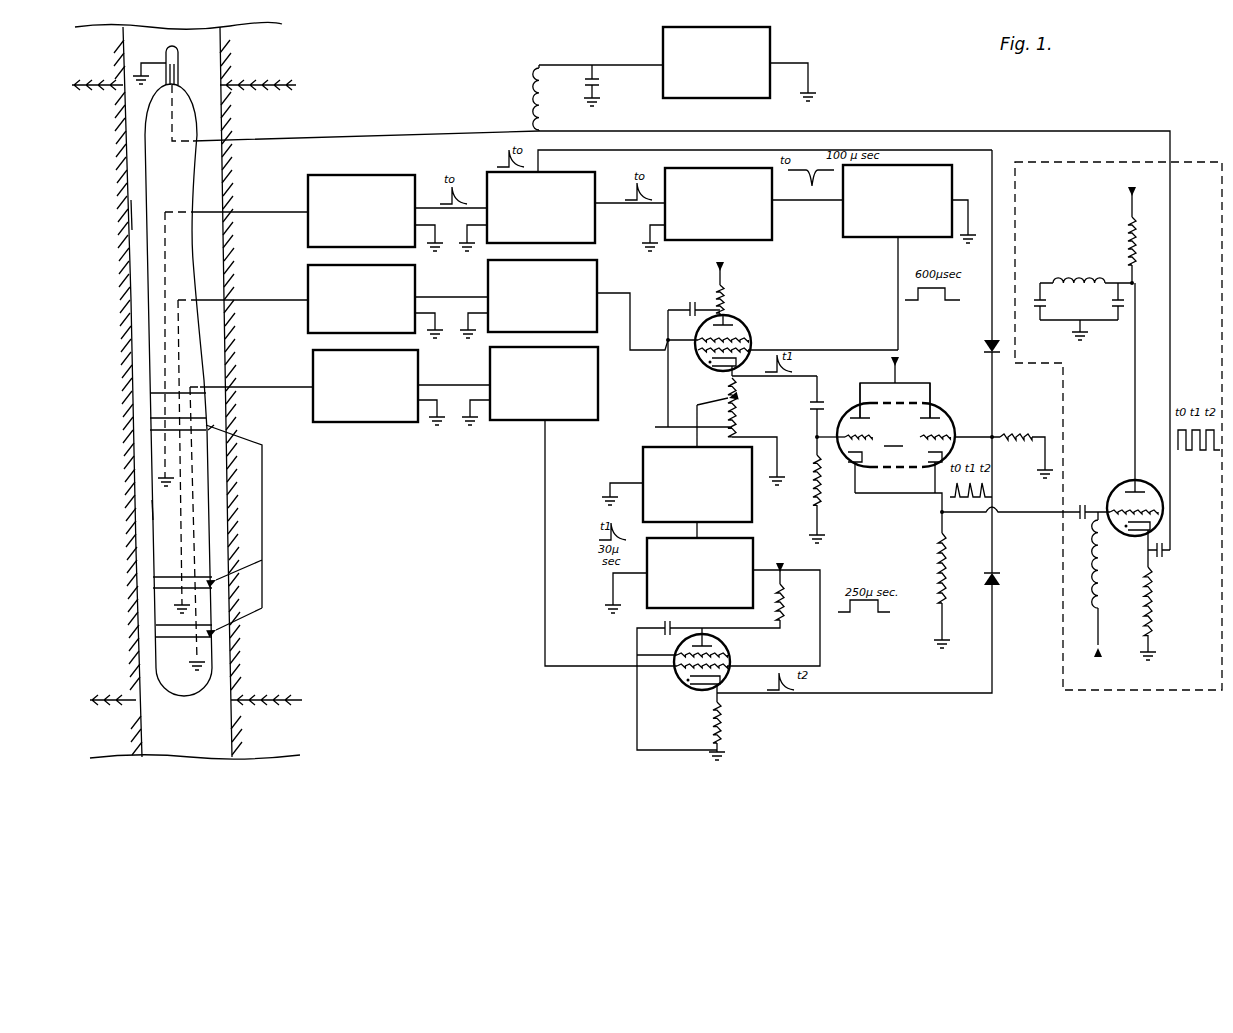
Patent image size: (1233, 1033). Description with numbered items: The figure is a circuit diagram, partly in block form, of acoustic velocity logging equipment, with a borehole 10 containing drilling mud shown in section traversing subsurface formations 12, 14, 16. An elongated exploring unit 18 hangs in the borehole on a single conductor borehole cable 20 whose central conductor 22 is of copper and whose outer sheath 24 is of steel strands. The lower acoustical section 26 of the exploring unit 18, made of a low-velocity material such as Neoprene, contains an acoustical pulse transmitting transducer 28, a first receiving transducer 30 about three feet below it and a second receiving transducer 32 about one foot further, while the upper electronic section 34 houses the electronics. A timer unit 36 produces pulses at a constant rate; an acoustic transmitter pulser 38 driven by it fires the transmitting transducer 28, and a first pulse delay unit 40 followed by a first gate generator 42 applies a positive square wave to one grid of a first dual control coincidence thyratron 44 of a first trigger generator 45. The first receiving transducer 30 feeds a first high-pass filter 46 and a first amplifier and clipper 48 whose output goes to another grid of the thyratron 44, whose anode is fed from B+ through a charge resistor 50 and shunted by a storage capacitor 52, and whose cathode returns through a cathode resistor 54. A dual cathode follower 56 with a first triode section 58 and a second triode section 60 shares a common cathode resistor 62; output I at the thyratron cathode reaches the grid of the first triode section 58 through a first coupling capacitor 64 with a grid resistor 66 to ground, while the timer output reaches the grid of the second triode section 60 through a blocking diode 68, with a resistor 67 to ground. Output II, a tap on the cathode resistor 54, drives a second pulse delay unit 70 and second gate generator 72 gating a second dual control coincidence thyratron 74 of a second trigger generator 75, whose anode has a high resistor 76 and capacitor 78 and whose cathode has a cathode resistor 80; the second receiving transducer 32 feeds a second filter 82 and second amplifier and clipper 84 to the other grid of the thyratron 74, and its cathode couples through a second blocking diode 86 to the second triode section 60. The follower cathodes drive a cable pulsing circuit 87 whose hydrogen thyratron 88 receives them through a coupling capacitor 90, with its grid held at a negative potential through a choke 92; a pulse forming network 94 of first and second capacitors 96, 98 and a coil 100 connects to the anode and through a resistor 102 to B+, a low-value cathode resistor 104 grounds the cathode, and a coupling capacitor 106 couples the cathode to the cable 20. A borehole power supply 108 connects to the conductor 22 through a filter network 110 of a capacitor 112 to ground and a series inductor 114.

The borehole 10 is at (222, 62).
The subsurface formation 12 is at (92, 61).
The subsurface formation 14 is at (105, 361).
The subsurface formation 16 is at (115, 745).
The exploring unit 18 is at (205, 698).
The single conductor borehole cable 20 is at (184, 64).
The central conductor 22 is at (179, 74).
The outer sheath 24 is at (163, 62).
The acoustical section 26 is at (152, 508).
The acoustical pulse transmitting transducer 28 is at (150, 430).
The first acoustic pulse receiving transducer 30 is at (153, 582).
The second acoustic pulse receiving transducer 32 is at (156, 630).
The electronic section 34 is at (130, 216).
The timer unit 36 is at (595, 236).
The acoustic transmitter pulser 38 is at (308, 182).
The first pulse delay unit 40 is at (772, 228).
The first gate generator 42 is at (862, 240).
The first dual control coincidence thyratron 44 is at (748, 327).
The first trigger generator 45 is at (697, 372).
The first high-pass filter 46 is at (308, 274).
The first amplifier and clipper 48 is at (597, 286).
The charge resistor 50 is at (726, 280).
The storage capacitor 52 is at (688, 308).
The cathode resistor 54 is at (728, 398).
The dual cathode follower 56 is at (896, 434).
The first triode section 58 is at (851, 405).
The second triode section 60 is at (946, 418).
The common cathode resistor 62 is at (945, 556).
The first coupling capacitor 64 is at (817, 400).
The resistor 66 is at (815, 470).
The resistor 67 is at (1004, 448).
The blocking diode 68 is at (988, 342).
The second pulse delay unit 70 is at (643, 467).
The second gate generator 72 is at (753, 556).
The second dual control coincidence thyratron 74 is at (725, 648).
The second trigger generator 75 is at (803, 646).
The high resistor 76 is at (778, 604).
The capacitor 78 is at (662, 622).
The cathode resistor 80 is at (712, 712).
The second filter 82 is at (313, 364).
The second amplifier and clipper 84 is at (598, 398).
The second blocking diode 86 is at (1000, 585).
The cable pulsing circuit 87 is at (1186, 690).
The hydrogen thyratron 88 is at (1147, 488).
The coupling capacitor 90 is at (1082, 505).
The choke 92 is at (1096, 600).
The pulse forming network 94 is at (1116, 300).
The first capacitor 96 is at (1038, 312).
The second capacitor 98 is at (1120, 312).
The coil 100 is at (1048, 280).
The resistor 102 is at (1136, 255).
The cathode resistor 104 is at (1152, 622).
The coupling capacitor 106 is at (1172, 552).
The borehole power supply 108 is at (772, 38).
The filter network 110 is at (576, 102).
The capacitor 112 is at (600, 88).
The inductor 114 is at (533, 80).